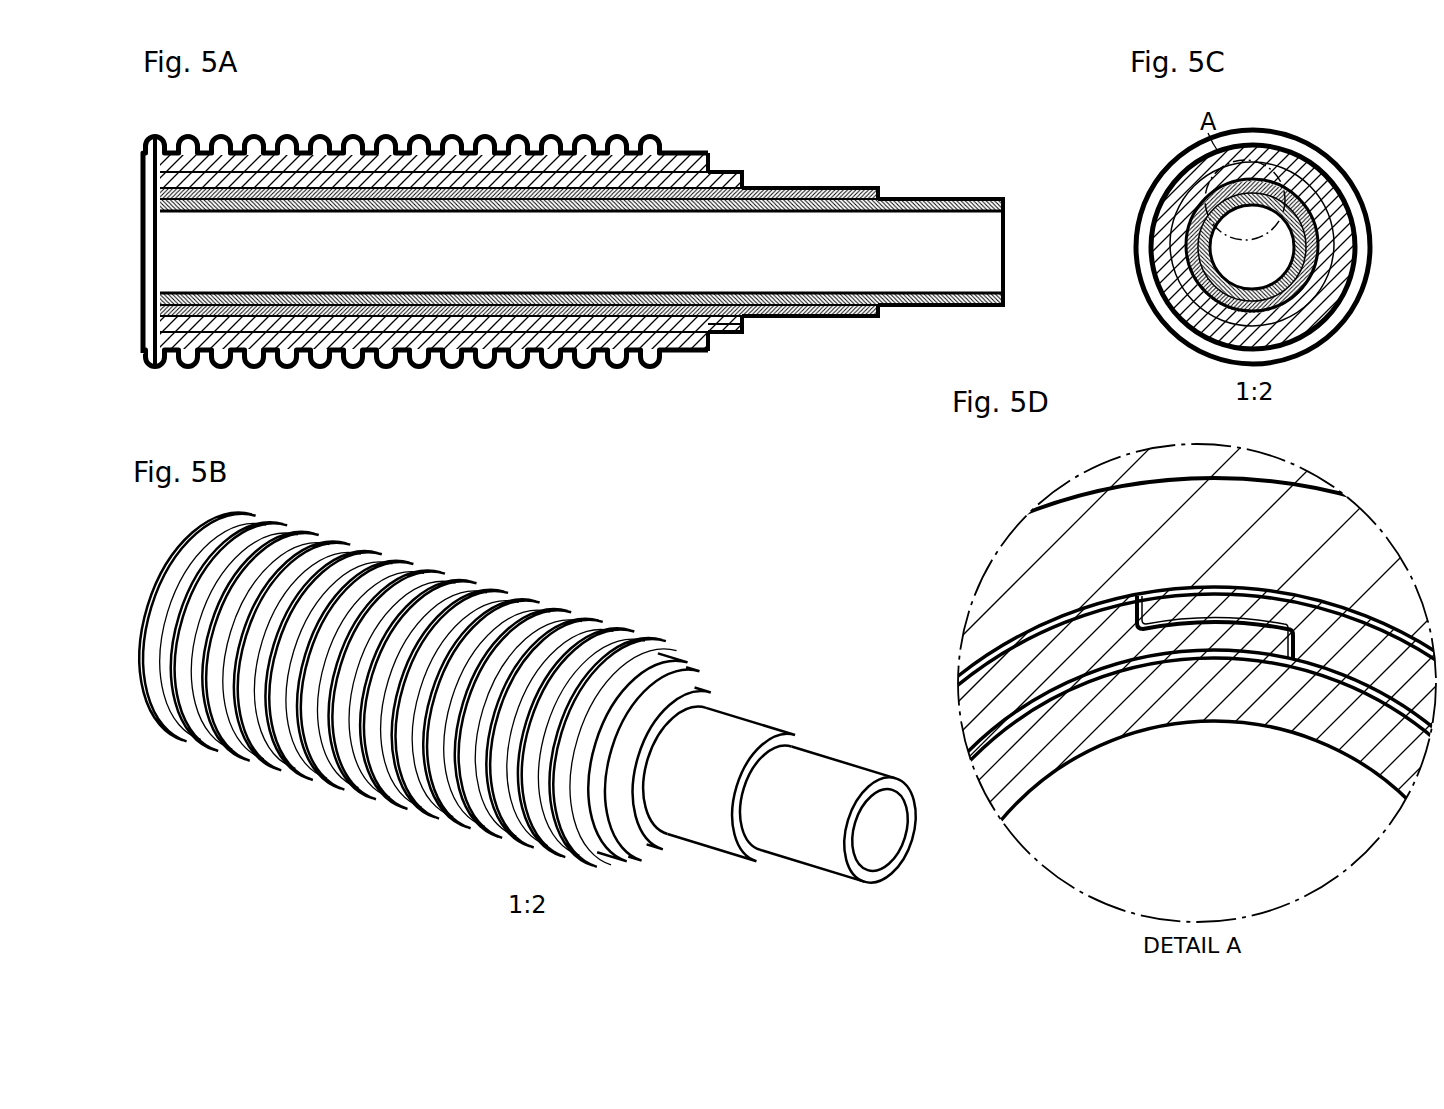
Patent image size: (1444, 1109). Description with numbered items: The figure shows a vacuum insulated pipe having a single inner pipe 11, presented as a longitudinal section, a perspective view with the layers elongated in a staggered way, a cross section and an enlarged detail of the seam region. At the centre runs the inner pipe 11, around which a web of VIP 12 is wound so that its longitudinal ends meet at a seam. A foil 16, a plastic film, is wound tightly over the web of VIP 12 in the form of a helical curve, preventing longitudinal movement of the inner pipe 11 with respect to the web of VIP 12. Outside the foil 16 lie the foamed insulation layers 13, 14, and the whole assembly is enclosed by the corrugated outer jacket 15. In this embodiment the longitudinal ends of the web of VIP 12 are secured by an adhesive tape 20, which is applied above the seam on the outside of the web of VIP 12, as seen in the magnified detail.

In FIG. 5A, the inner pipe 11 is at (943, 198).
In FIG. 5B, the inner pipe 11 is at (843, 771).
In FIG. 5A, the web of VIP 12 is at (836, 188).
In FIG. 5B, the web of VIP 12 is at (761, 728).
In FIG. 5A, the insulation layer 13 is at (726, 180).
In FIG. 5B, the insulation layer 13 is at (709, 704).
In FIG. 5A, the insulation layer 14 is at (684, 160).
In FIG. 5B, the insulation layer 14 is at (678, 671).
In FIG. 5A, the outer jacket 15 is at (646, 135).
In FIG. 5B, the outer jacket 15 is at (634, 632).
In FIG. 5A, the foil 16 is at (726, 322).
In FIG. 5D, the adhesive tape 20 is at (1147, 598).